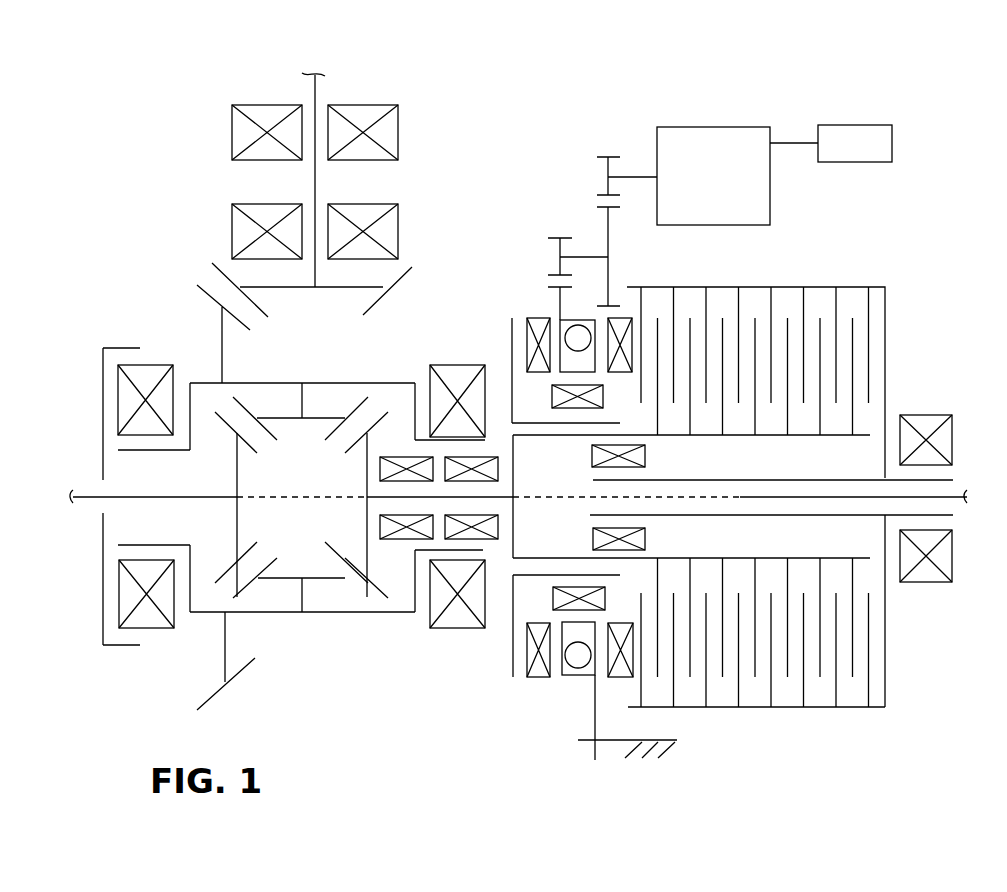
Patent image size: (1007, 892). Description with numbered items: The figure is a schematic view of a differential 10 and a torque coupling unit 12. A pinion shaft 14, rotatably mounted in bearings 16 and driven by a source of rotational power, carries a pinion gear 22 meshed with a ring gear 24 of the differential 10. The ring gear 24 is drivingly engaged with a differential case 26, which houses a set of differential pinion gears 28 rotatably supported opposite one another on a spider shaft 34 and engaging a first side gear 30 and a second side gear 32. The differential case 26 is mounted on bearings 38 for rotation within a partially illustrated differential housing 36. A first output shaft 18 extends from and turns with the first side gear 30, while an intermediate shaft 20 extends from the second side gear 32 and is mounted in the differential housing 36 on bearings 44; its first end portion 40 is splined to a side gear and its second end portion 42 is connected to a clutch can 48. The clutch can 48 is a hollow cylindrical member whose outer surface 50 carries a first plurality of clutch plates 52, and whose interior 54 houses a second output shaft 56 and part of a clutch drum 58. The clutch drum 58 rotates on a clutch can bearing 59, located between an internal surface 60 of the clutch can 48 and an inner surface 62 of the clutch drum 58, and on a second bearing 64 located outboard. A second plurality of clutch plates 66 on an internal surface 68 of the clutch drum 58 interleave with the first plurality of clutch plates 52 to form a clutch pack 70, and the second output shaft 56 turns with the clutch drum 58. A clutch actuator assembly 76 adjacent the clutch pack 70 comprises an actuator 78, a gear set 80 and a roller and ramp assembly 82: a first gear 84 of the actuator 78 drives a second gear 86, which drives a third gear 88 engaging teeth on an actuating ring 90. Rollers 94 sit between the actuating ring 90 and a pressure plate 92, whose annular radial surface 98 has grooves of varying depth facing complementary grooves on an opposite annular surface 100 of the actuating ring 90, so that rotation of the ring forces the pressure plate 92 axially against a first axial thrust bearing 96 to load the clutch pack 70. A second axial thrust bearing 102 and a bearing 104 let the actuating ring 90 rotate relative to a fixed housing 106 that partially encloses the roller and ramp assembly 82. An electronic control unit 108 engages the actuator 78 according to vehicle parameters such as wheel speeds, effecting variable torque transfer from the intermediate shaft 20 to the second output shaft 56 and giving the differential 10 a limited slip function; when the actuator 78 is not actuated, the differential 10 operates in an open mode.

The differential 10 is at (170, 310).
The torque coupling unit 12 is at (694, 100).
The pinion shaft 14 is at (313, 98).
The bearings 16 is at (231, 151).
The first output shaft 18 is at (88, 494).
The intermediate shaft 20 is at (376, 492).
The pinion gear 22 is at (417, 268).
The ring gear 24 is at (250, 329).
The differential case 26 is at (335, 612).
The differential pinion gears 28 is at (357, 407).
The first side gear 30 is at (222, 573).
The second side gear 32 is at (354, 550).
The spider shaft 34 is at (301, 604).
The differential housing 36 is at (103, 637).
The bearings 38 is at (160, 630).
The first end portion 40 is at (374, 500).
The second end portion 42 is at (508, 497).
The bearings 44 is at (400, 457).
The clutch can 48 is at (515, 546).
The outer surface 50 is at (518, 677).
The first plurality of clutch plates 52 is at (788, 420).
The interior 54 is at (550, 436).
The second output shaft 56 is at (968, 495).
The clutch drum 58 is at (722, 480).
The clutch can bearing 59 is at (647, 455).
The internal surface 60 is at (658, 558).
The inner surface 62 is at (733, 515).
The second bearing 64 is at (927, 415).
The second plurality of clutch plates 66 is at (740, 297).
The internal surface 68 is at (850, 288).
The clutch pack 70 is at (906, 644).
The clutch actuator assembly 76 is at (586, 134).
The actuator 78 is at (763, 127).
The gear set 80 is at (576, 201).
The roller and ramp assembly 82 is at (556, 728).
The first gear 84 is at (615, 157).
The second gear 86 is at (608, 228).
The third gear 88 is at (557, 248).
The actuating ring 90 is at (560, 362).
The pressure plate 92 is at (590, 730).
The rollers 94 is at (578, 670).
The first axial thrust bearing 96 is at (628, 317).
The annular radial surface 98 is at (592, 688).
The opposite annular surface 100 is at (563, 305).
The second axial thrust bearing 102 is at (537, 317).
The bearing 104 is at (590, 587).
The housing 106 is at (615, 422).
The electronic control unit 108 is at (853, 125).